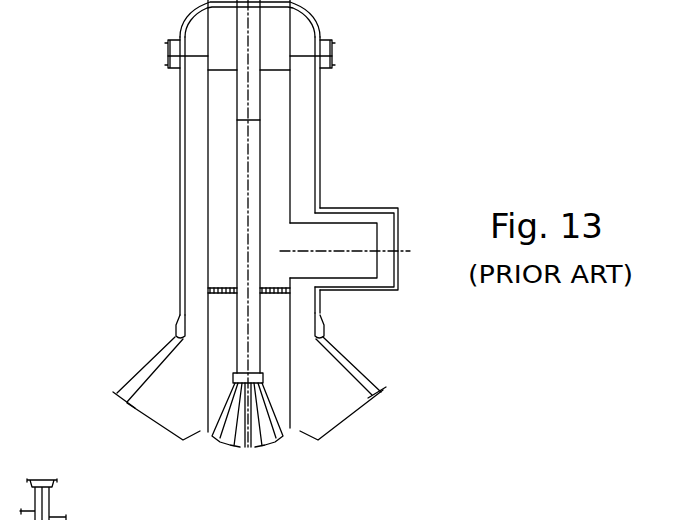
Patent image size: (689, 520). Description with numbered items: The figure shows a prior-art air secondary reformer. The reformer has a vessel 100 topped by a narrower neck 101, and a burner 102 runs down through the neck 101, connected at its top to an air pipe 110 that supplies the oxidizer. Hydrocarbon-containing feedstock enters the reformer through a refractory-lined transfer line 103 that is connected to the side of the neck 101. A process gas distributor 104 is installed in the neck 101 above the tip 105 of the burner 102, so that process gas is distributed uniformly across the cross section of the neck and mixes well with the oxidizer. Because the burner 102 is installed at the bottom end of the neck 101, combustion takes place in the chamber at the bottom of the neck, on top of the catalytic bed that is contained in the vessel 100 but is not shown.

The vessel 100 is at (135, 382).
The neck 101 is at (180, 163).
The burner 102 is at (290, 413).
The refractory-lined transfer line 103 is at (350, 233).
The process gas distributor 104 is at (237, 303).
The tip 105 is at (280, 449).
The air pipe 110 is at (257, 146).